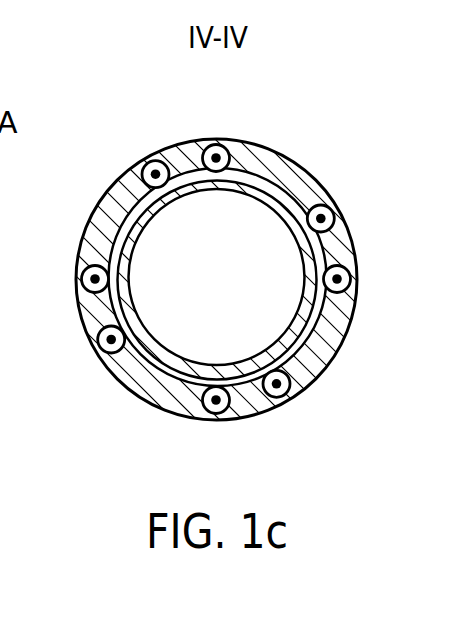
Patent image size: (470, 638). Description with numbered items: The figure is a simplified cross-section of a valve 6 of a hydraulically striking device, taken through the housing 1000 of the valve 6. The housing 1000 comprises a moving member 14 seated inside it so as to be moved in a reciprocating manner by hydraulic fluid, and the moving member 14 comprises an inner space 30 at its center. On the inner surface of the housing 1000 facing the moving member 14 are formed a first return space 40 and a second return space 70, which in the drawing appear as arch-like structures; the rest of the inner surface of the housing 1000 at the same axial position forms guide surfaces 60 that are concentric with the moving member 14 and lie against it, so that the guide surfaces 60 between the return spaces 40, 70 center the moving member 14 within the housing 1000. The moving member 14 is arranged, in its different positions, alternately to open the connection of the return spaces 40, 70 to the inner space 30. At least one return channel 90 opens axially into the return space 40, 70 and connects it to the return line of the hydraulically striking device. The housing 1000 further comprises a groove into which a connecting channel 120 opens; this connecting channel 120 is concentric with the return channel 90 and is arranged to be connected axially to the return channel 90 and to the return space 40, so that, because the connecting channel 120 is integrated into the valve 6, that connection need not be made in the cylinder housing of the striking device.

The valve 6 is at (67, 343).
The moving member 14 is at (243, 193).
The inner space 30 is at (220, 278).
The return space 40 is at (312, 248).
The guide surfaces 60 is at (268, 195).
The second return space 70 is at (178, 175).
The return channel 90 is at (342, 279).
The connecting channel 120 is at (342, 280).
The housing 1000 is at (150, 408).